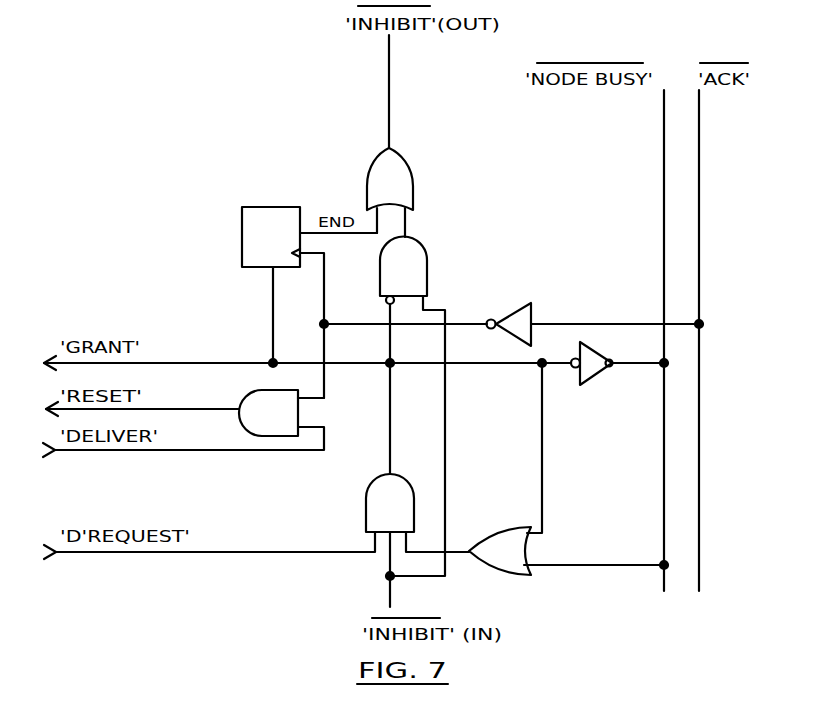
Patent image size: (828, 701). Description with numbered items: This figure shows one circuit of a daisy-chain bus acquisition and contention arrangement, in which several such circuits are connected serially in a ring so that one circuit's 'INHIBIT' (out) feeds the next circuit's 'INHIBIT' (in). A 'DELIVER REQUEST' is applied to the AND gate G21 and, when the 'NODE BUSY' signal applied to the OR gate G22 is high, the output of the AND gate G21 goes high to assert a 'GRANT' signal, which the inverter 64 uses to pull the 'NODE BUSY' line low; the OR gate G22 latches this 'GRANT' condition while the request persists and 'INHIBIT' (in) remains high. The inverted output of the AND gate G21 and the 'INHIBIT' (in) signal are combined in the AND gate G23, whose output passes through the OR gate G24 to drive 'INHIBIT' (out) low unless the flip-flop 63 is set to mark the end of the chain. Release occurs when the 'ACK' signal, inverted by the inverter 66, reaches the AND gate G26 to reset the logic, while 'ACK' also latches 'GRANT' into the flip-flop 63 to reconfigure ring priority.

The flip-flop 63 is at (288, 222).
The inverter 64 is at (589, 374).
The inverter 66 is at (521, 312).
The AND gate G21 is at (390, 503).
The OR gate G22 is at (500, 551).
The AND gate G23 is at (403, 266).
The OR gate G24 is at (390, 179).
The AND gate G26 is at (268, 413).